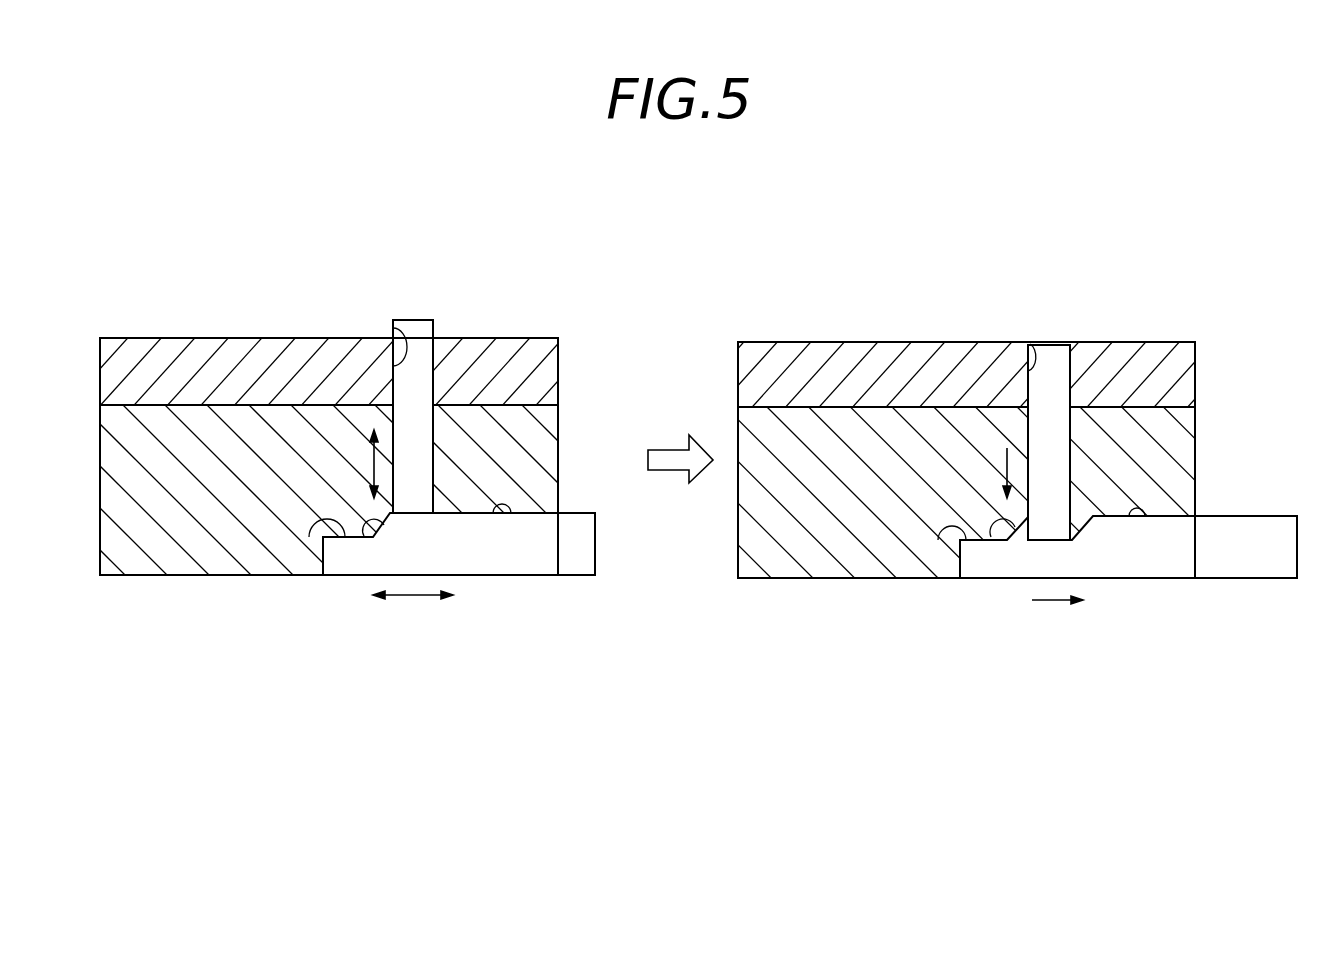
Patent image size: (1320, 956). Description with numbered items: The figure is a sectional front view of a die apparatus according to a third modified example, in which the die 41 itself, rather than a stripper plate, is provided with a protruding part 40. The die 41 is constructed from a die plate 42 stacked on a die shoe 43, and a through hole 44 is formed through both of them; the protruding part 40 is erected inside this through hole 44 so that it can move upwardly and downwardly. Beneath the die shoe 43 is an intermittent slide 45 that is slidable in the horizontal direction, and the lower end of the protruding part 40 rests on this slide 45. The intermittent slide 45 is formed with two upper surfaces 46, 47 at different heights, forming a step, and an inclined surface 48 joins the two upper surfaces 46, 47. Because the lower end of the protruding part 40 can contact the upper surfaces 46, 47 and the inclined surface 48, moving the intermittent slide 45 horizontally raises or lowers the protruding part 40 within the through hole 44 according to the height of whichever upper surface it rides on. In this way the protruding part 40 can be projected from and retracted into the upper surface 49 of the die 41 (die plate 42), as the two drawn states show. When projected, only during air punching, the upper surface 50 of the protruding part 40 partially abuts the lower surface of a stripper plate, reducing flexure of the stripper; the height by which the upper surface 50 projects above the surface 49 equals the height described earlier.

The protruding part 40 is at (437, 320).
The die 41 is at (557, 325).
The die plate 42 is at (548, 365).
The die shoe 43 is at (543, 427).
The through hole 44 is at (393, 328).
The intermittent slide 45 is at (565, 553).
The upper surface 46 is at (308, 518).
The upper surface 47 is at (510, 513).
The inclined surface 48 is at (363, 530).
The surface (upper surface) of the die 49 is at (252, 338).
The upper surface of the protruding part 50 is at (413, 320).